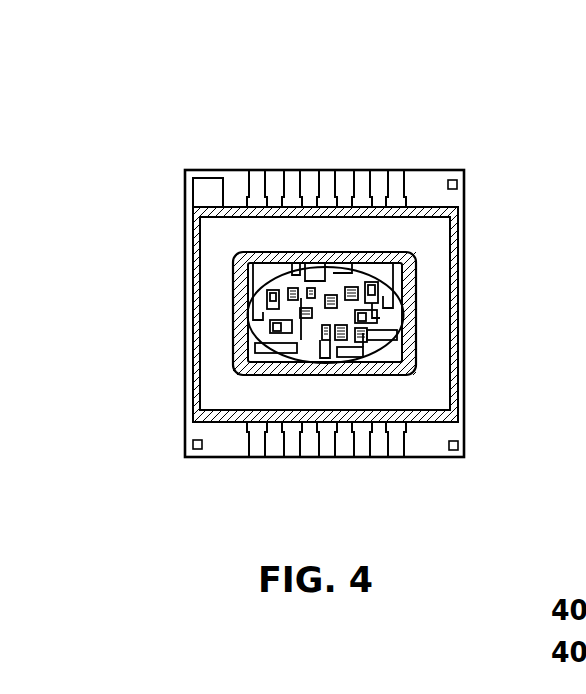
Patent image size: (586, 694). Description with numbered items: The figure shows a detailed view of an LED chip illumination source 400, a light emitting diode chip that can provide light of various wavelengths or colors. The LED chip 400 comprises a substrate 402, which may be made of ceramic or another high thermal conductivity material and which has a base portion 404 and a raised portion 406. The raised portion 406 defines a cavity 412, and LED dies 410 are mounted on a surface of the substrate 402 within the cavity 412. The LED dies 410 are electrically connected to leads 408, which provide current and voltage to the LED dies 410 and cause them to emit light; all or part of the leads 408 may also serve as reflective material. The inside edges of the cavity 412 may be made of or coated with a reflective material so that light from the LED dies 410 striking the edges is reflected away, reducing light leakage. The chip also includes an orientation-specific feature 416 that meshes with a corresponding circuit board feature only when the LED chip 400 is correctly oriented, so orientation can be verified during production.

The LED chip illumination source 400 is at (210, 84).
The substrate 402 is at (533, 272).
The base portion 404 is at (432, 182).
The raised portion 406 is at (455, 204).
The leads 408 is at (396, 178).
The LED dies 410 is at (270, 326).
The cavity 412 is at (408, 347).
The orientation-specific feature 416 is at (205, 192).